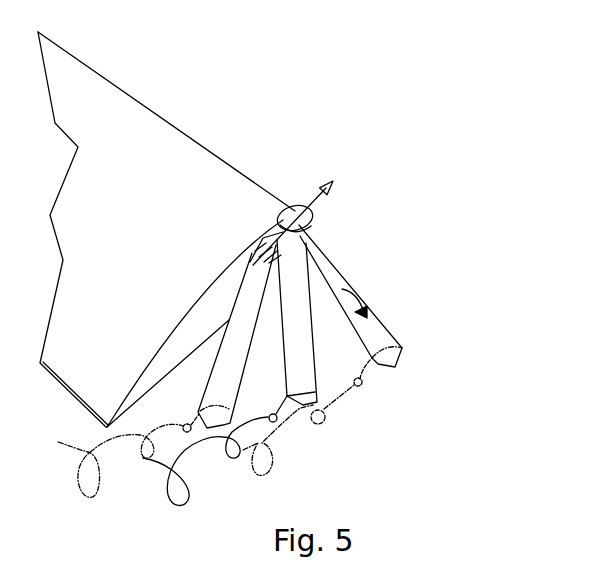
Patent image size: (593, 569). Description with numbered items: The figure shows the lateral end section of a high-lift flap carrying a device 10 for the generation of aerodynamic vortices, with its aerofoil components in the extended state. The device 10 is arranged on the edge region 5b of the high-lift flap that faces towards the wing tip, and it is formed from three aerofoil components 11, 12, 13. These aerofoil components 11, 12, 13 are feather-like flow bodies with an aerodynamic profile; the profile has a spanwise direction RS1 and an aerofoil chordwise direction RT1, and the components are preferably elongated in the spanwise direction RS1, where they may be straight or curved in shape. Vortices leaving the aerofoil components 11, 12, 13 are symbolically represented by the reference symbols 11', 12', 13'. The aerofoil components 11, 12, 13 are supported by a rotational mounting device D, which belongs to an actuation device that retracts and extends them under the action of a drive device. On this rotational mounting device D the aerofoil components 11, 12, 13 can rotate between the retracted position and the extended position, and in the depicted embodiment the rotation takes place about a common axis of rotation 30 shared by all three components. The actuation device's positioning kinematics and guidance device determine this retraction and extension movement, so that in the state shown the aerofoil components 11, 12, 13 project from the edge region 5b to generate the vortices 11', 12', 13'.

The edge region 5b is at (88, 391).
The device for vortex generation 10 is at (347, 238).
The aerofoil component 11 is at (209, 336).
The aerofoil component 12 is at (282, 331).
The aerofoil component 13 is at (350, 331).
The vortex 11' is at (128, 465).
The vortex 12' is at (215, 452).
The vortex 13' is at (307, 421).
The common axis of rotation 30 is at (318, 190).
The rotational mounting device D is at (344, 147).
The spanwise direction RS1 is at (360, 292).
The aerofoil chordwise direction RT1 is at (375, 346).